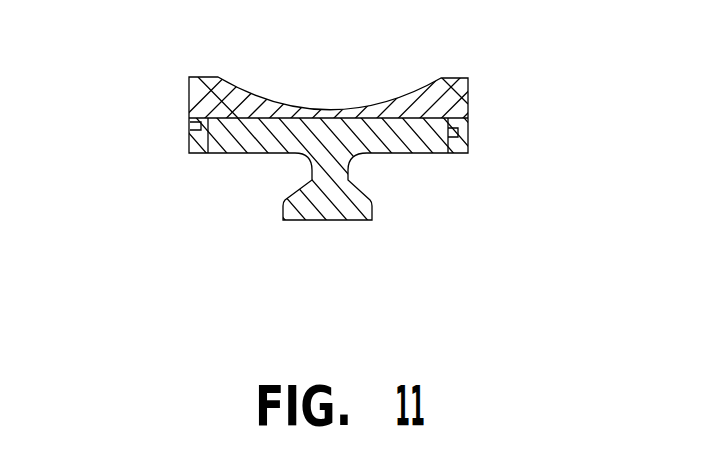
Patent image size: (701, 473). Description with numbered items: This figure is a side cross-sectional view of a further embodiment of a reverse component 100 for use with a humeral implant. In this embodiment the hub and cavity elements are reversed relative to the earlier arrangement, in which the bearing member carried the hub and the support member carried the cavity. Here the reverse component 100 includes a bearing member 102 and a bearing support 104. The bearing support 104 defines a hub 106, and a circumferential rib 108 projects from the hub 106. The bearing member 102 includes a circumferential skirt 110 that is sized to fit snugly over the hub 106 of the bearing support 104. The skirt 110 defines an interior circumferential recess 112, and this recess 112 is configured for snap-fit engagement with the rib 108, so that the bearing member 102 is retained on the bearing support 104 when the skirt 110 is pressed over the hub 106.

The reverse component 100 is at (478, 80).
The bearing member 102 is at (188, 93).
The bearing support 104 is at (388, 150).
The hub 106 is at (189, 150).
The circumferential rib 108 is at (189, 125).
The circumferential skirt 110 is at (470, 139).
The interior circumferential recess 112 is at (432, 133).